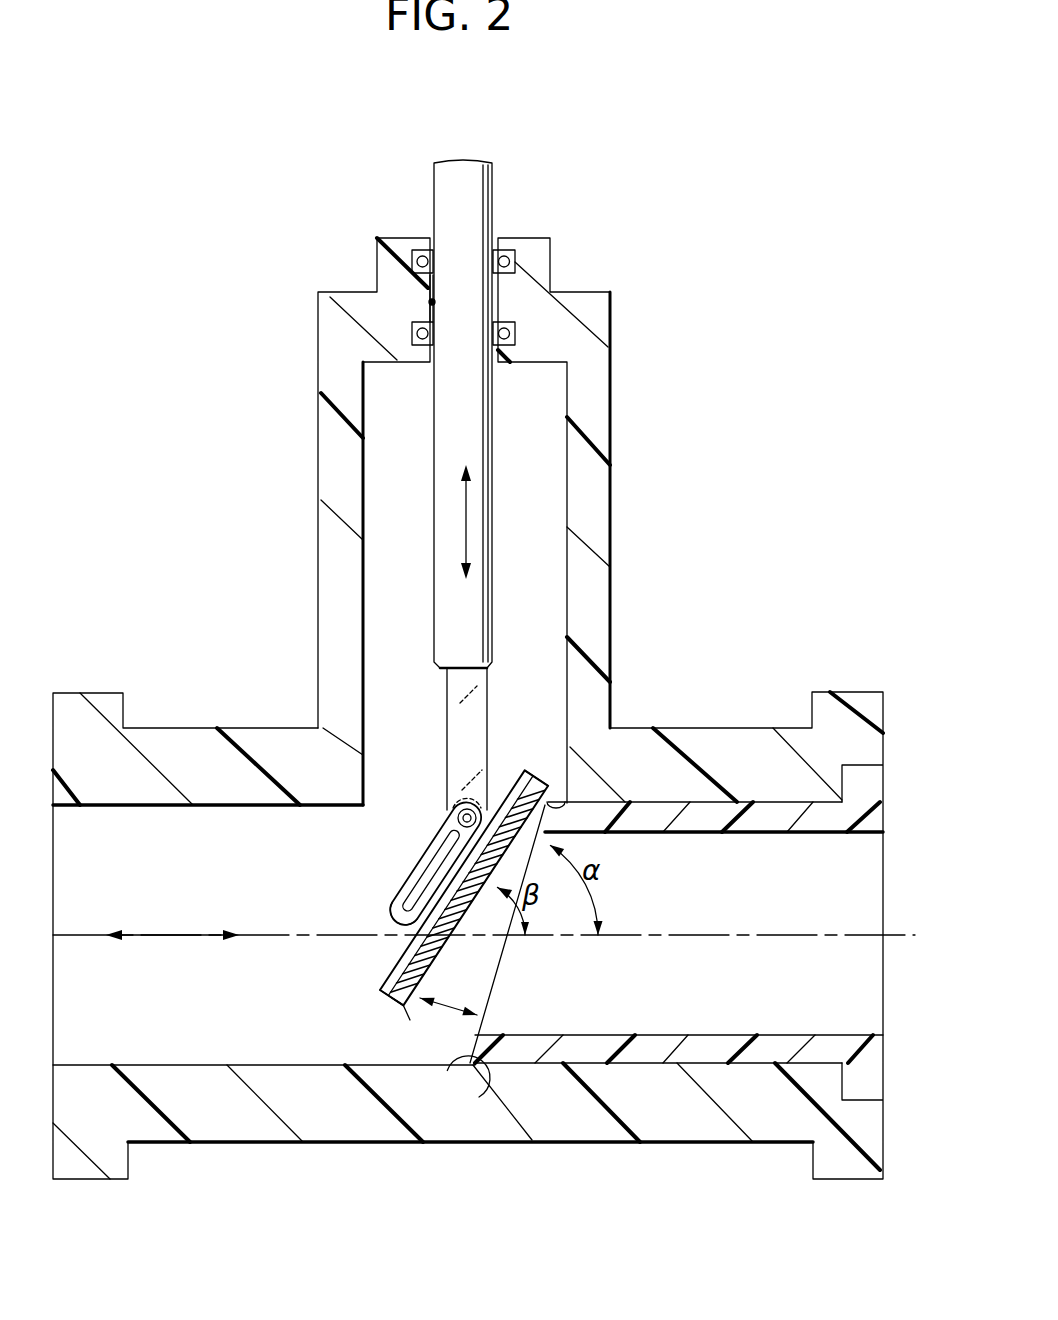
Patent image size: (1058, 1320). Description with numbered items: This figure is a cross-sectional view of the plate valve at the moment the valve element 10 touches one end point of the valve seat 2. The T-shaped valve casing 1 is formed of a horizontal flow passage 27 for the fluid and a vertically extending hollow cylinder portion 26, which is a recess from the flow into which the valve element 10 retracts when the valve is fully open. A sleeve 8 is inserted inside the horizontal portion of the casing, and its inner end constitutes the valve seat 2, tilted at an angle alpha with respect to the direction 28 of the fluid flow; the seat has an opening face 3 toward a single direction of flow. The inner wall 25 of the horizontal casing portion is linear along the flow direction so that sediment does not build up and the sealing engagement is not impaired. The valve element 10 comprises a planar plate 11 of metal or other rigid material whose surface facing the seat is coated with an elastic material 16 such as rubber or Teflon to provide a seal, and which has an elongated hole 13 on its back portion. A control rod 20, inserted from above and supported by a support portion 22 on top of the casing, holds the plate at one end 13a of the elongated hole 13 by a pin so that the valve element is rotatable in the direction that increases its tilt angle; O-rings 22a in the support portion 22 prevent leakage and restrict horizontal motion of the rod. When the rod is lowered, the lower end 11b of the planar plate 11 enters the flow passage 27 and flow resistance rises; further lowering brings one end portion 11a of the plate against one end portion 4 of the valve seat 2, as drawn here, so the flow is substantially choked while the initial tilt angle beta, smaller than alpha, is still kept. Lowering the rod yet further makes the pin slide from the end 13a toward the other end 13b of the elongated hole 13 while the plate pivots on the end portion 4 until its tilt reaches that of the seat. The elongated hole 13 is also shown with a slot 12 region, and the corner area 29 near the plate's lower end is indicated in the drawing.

The valve casing 1 is at (758, 752).
The valve seat 2 is at (494, 973).
The opening face 3 is at (495, 958).
The end portion of the valve seat 4 is at (562, 800).
The sleeve 8 is at (652, 833).
The valve element 10 is at (518, 752).
The planar plate 11 is at (392, 978).
The end portion of the planar plate 11a is at (560, 782).
The lower end of the planar plate 11b is at (385, 1000).
The slot 12 is at (440, 863).
The elongated hole 13 is at (440, 848).
The one end of the elongated hole 13a is at (458, 812).
The other end of the elongated hole 13b is at (393, 910).
The elastic material 16 is at (402, 1003).
The control rod 20 is at (480, 397).
The support portion 22 is at (430, 295).
The O-rings 22a is at (516, 332).
The inner wall 25 is at (477, 1097).
The hollow cylinder portion 26 is at (540, 487).
The flow passage 27 is at (180, 885).
The direction of fluid flow 28 is at (178, 948).
The gap 29 is at (441, 1007).